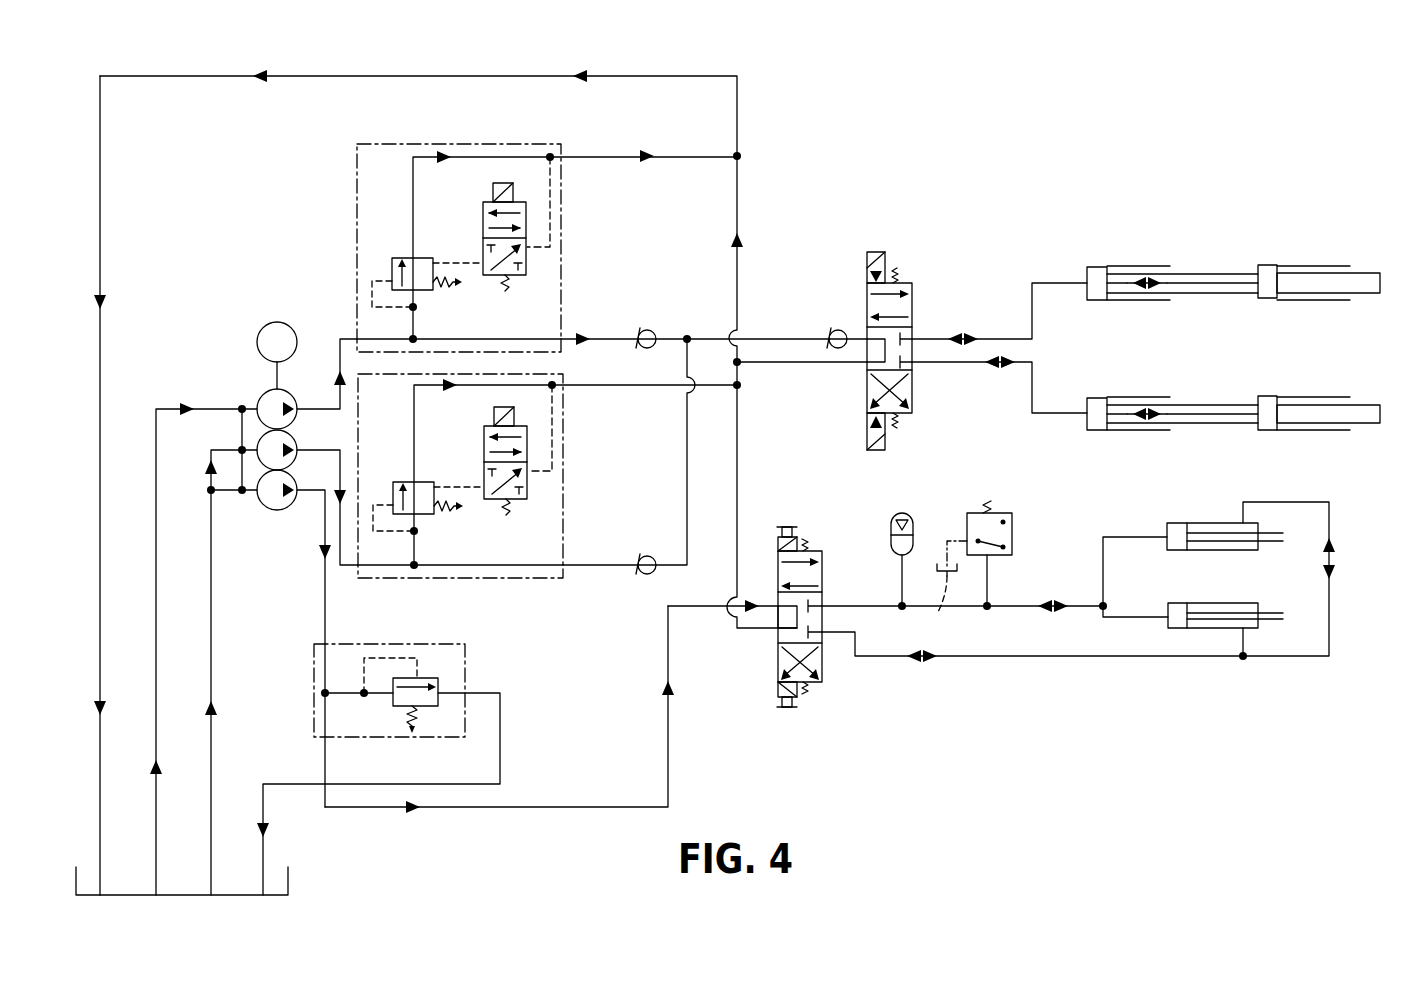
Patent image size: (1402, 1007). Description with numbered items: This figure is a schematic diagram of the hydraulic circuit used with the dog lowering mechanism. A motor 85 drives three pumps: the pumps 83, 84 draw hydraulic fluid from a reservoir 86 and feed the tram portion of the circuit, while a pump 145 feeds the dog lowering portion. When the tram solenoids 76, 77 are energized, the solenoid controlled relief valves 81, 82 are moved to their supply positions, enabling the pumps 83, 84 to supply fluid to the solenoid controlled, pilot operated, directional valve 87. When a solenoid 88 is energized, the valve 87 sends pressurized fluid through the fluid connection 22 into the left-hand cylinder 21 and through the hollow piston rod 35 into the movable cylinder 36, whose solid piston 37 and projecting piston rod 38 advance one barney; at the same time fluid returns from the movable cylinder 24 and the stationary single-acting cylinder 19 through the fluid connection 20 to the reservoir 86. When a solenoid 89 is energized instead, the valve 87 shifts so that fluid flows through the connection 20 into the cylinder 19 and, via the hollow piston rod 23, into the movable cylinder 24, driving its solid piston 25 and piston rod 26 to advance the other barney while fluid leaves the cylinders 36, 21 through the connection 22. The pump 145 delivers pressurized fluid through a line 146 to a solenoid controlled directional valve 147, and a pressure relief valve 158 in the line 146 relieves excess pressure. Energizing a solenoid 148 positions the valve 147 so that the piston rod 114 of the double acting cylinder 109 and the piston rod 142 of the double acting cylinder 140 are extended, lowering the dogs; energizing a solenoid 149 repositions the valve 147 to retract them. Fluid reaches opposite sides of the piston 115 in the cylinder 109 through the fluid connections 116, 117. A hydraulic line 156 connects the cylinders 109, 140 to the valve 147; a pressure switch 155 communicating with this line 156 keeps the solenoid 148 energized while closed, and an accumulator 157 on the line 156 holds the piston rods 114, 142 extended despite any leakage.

The stationary single-acting cylinder 19 is at (1133, 431).
The fluid connection 20 is at (1085, 414).
The left-hand cylinder 21 is at (1160, 266).
The fluid connection 22 is at (1084, 280).
The hollow piston rod 23 is at (1238, 424).
The movable cylinder 24 is at (1297, 397).
The solid piston 25 is at (1268, 430).
The piston rod 26 is at (1356, 405).
The hollow piston rod 35 is at (1188, 273).
The movable cylinder 36 is at (1340, 267).
The solid piston 37 is at (1266, 265).
The piston rod 38 is at (1356, 273).
The tram solenoid 76 is at (500, 192).
The tram solenoid 77 is at (501, 409).
The solenoid controlled relief valve 81 is at (350, 187).
The solenoid controlled relief valve 82 is at (570, 448).
The pump 83 is at (291, 395).
The pump 84 is at (292, 446).
The motor 85 is at (283, 323).
The reservoir 86 is at (289, 872).
The solenoid controlled, pilot operated, directional valve 87 is at (858, 297).
The solenoid 88 is at (876, 253).
The solenoid 89 is at (866, 437).
The double acting cylinder 109 is at (1213, 628).
The piston rod 114 is at (1270, 617).
The piston 115 is at (1171, 622).
The fluid connection 116 is at (1110, 616).
The fluid connection 117 is at (1248, 648).
The double acting cylinder 140 is at (1175, 523).
The piston rod 142 is at (1272, 537).
The pump 145 is at (273, 511).
The line 146 is at (520, 807).
The solenoid controlled directional valve 147 is at (833, 672).
The solenoid 148 is at (798, 537).
The solenoid 149 is at (803, 695).
The pressure switch 155 is at (1012, 518).
The hydraulic line 156 is at (1003, 605).
The accumulator 157 is at (907, 514).
The pressure relief valve 158 is at (474, 667).